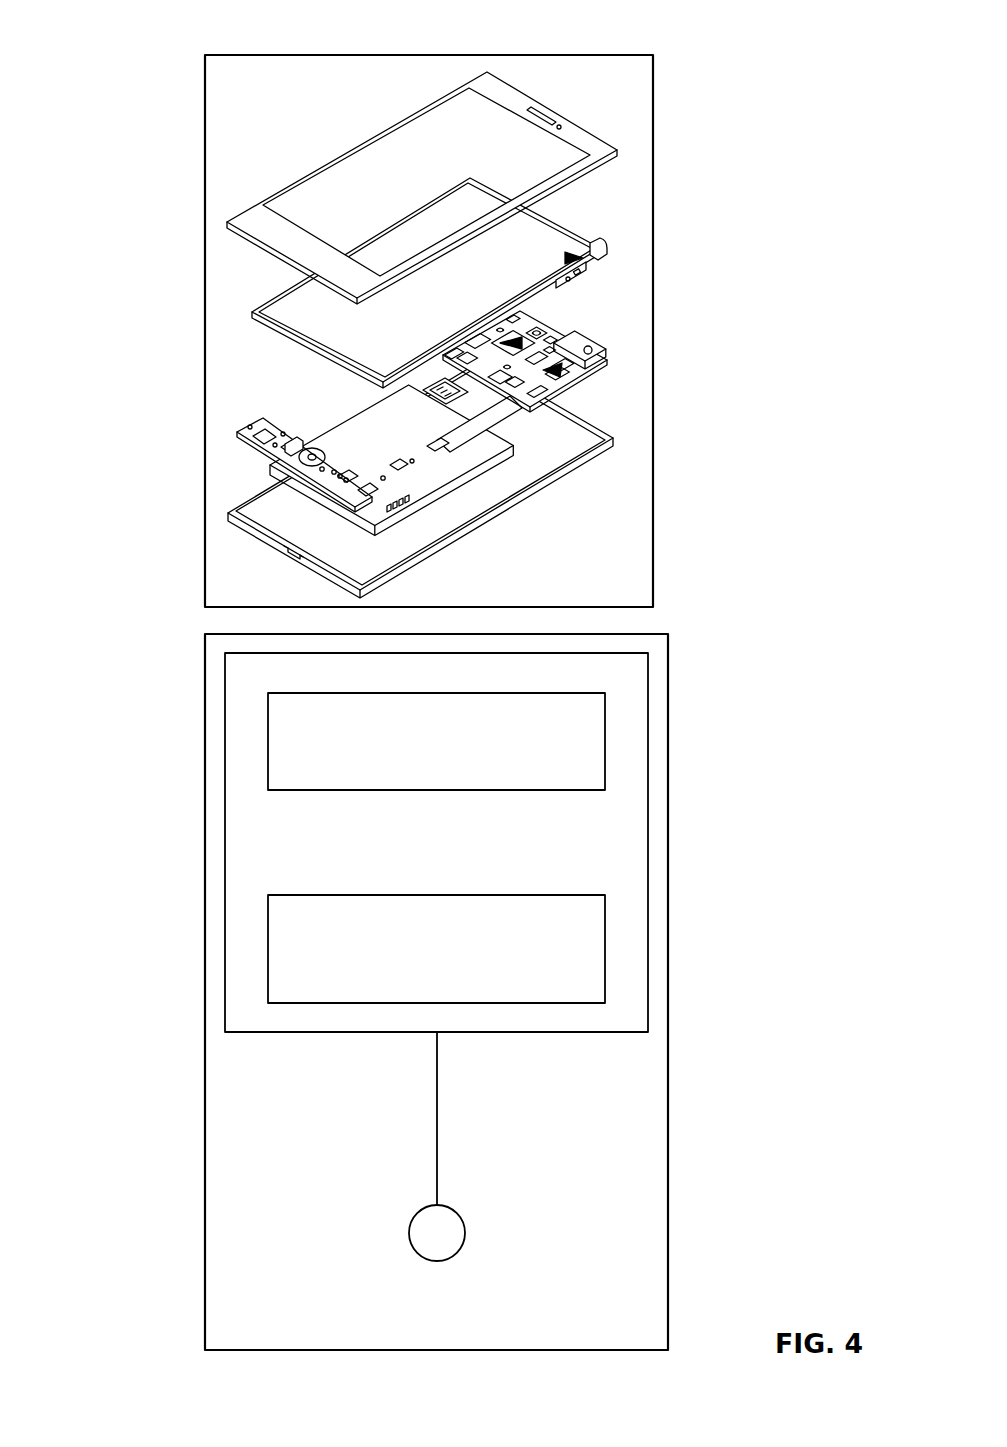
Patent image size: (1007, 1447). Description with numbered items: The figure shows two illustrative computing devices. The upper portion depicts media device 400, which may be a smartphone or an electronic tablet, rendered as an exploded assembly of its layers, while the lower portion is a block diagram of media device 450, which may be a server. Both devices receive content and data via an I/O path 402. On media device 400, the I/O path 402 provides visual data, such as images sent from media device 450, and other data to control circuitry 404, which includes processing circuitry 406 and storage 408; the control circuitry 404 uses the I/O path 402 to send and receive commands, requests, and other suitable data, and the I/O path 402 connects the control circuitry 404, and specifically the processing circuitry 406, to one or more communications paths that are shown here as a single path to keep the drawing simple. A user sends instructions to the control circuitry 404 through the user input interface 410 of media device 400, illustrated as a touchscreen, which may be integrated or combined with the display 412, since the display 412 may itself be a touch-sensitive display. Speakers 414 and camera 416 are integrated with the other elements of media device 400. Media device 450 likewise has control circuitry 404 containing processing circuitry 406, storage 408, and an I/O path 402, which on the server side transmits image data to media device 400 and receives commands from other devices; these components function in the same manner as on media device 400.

The media device 400 is at (128, 42).
The I/O path 402 is at (298, 438).
The control circuitry 404 is at (597, 440).
The processing circuitry 406 is at (565, 395).
The storage 408 is at (592, 360).
The user input interface 410 is at (523, 238).
The display 412 is at (590, 266).
The speakers 414 is at (539, 104).
The camera 416 is at (615, 249).
The media device 450 is at (148, 702).